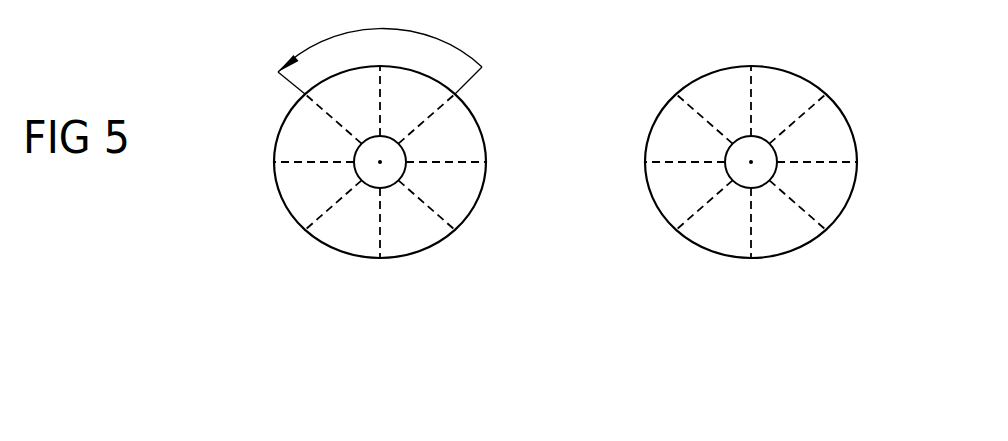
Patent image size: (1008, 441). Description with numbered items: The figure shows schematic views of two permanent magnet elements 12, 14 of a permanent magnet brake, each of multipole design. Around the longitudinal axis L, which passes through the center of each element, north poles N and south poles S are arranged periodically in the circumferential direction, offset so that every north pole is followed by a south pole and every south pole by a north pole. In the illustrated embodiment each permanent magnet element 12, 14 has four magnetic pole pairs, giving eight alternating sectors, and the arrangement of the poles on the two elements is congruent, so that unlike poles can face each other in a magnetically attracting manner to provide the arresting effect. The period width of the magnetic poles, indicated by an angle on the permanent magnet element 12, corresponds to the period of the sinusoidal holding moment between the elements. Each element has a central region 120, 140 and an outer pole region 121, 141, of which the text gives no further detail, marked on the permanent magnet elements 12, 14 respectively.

The permanent magnet element 12 is at (377, 184).
The hub of first magnet arrangement 120 is at (355, 170).
The magnetic pole segment of first magnet arrangement 121 is at (463, 137).
The permanent magnet element 14 is at (766, 201).
The hub of second magnet arrangement 140 is at (758, 175).
The magnetic pole segment of second magnet arrangement 141 is at (802, 93).
The longitudinal axis L is at (378, 166).